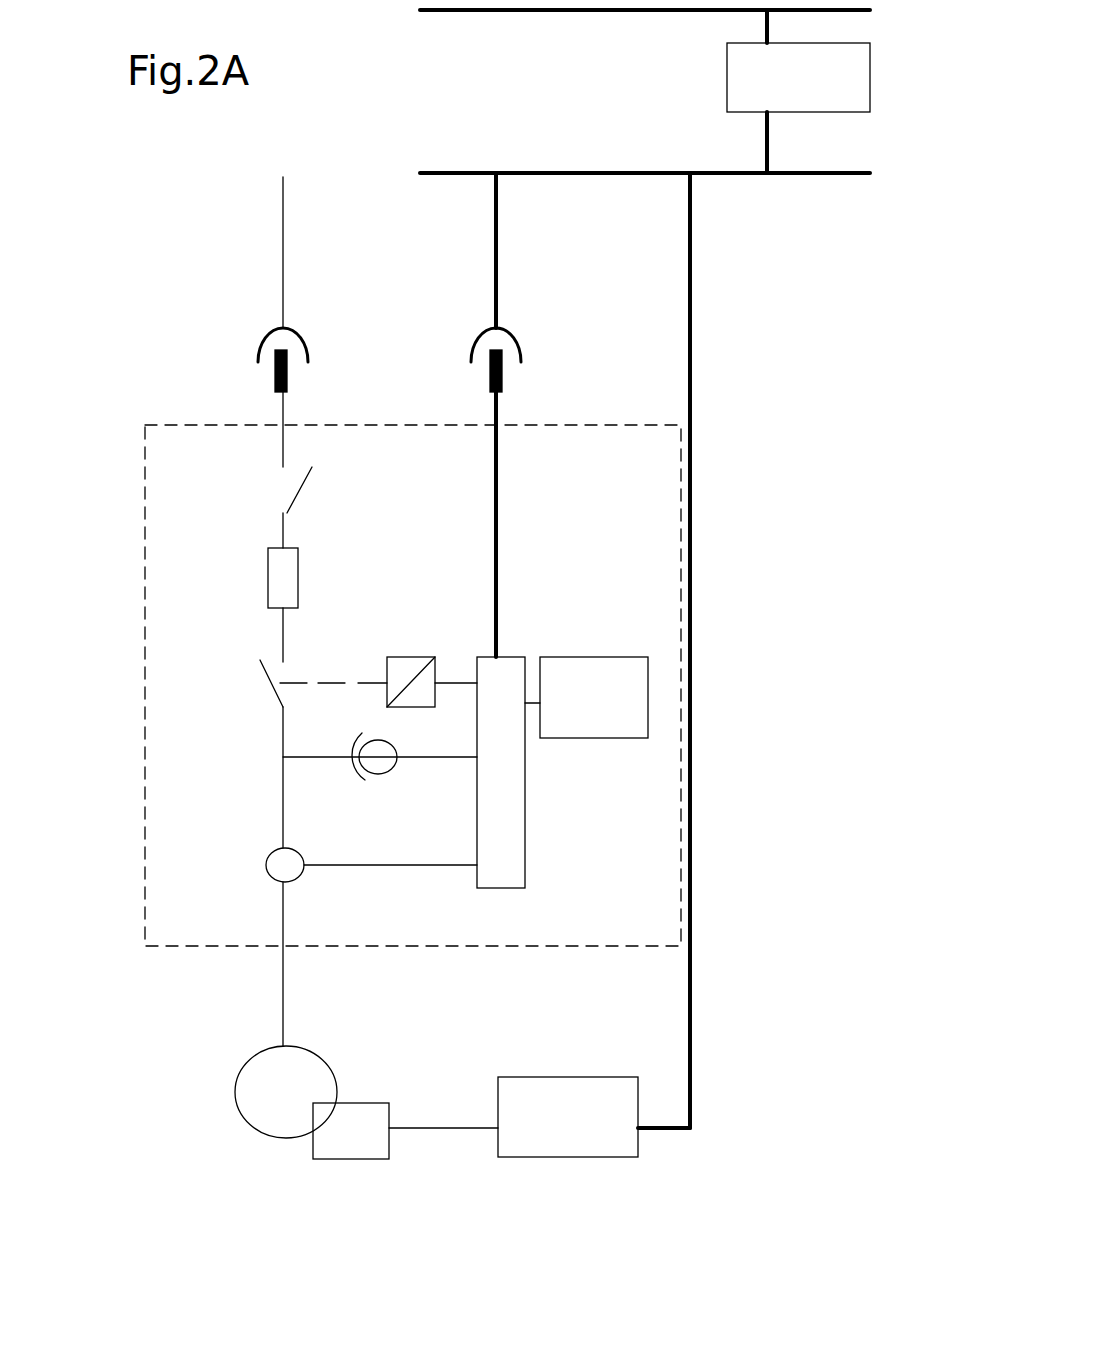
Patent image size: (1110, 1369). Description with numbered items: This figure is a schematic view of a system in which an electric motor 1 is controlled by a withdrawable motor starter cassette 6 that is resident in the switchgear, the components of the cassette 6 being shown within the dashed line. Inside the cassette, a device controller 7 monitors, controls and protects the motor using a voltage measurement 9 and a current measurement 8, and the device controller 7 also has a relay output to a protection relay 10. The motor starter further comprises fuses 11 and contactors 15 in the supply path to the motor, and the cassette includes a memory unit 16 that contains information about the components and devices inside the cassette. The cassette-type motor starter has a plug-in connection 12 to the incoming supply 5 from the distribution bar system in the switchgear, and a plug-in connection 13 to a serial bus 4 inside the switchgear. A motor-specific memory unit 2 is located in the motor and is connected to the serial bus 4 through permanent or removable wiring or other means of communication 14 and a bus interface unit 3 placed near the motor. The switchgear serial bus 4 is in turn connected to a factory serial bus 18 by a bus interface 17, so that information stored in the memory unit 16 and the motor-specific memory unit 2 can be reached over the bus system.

The electric motor 1 is at (250, 1073).
The motor-specific memory unit 2 is at (364, 1152).
The bus interface unit 3 is at (590, 1148).
The serial bus 4 is at (725, 175).
The incoming supply 5 is at (283, 237).
The motor starter cassette 6 is at (145, 470).
The device controller 7 is at (503, 888).
The current measurement 8 is at (296, 875).
The voltage measurement 9 is at (380, 770).
The protection relay 10 is at (400, 658).
The fuses 11 is at (268, 568).
The plug-in connection 12 is at (288, 372).
The plug-in connection 13 is at (502, 374).
The wiring or other means of communication 14 is at (428, 1127).
The contactors 15 is at (312, 494).
The memory unit 16 is at (560, 657).
The bus interface 17 is at (735, 93).
The factory serial bus 18 is at (483, 12).